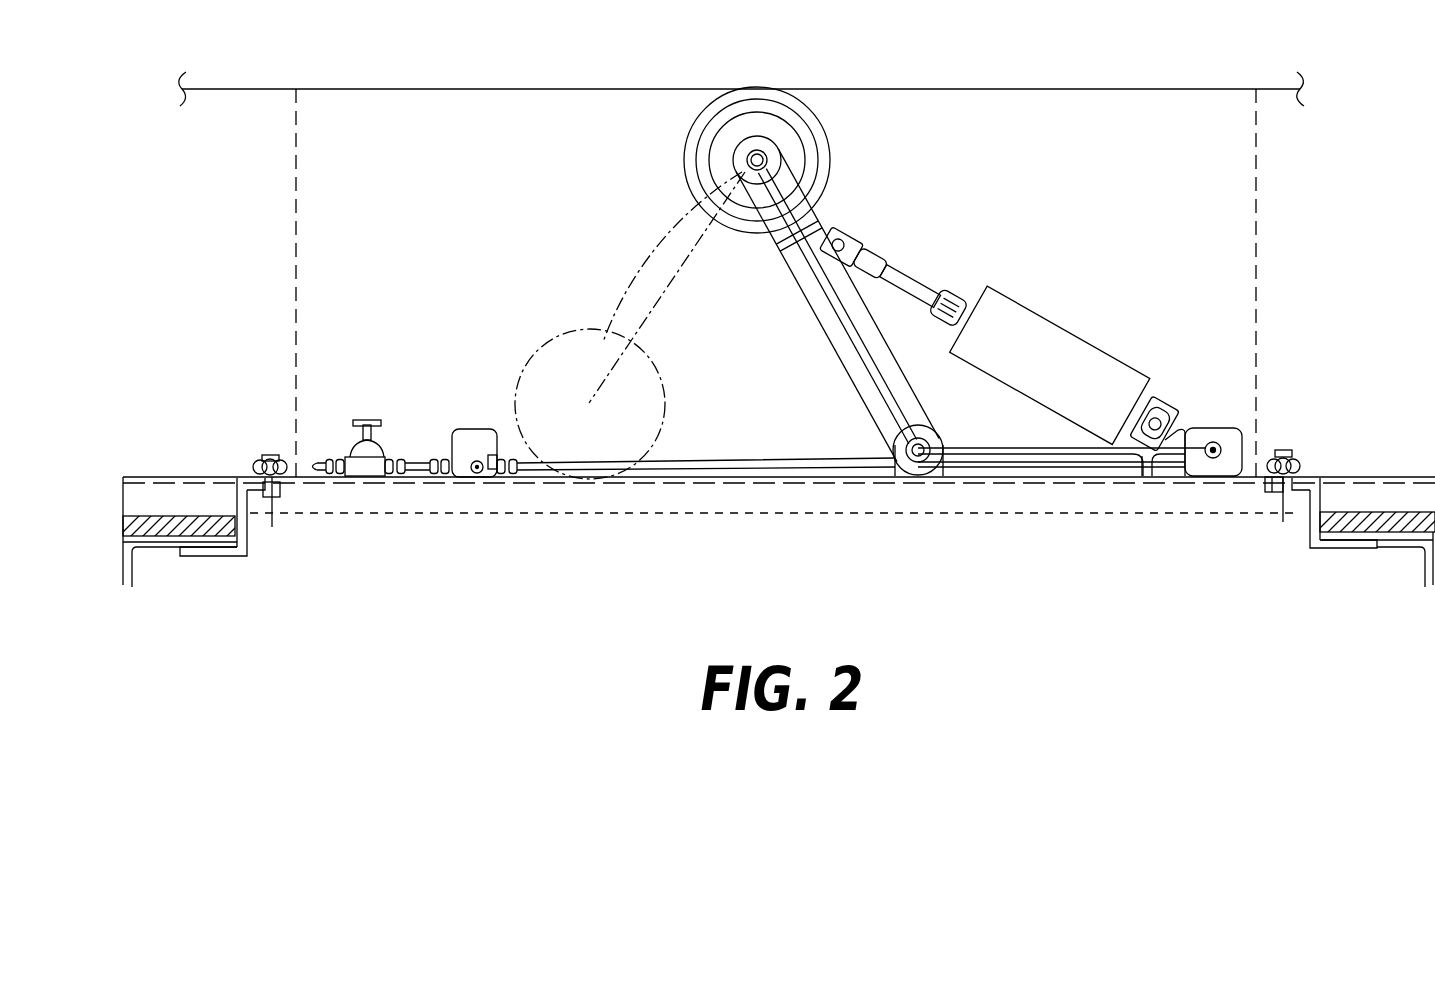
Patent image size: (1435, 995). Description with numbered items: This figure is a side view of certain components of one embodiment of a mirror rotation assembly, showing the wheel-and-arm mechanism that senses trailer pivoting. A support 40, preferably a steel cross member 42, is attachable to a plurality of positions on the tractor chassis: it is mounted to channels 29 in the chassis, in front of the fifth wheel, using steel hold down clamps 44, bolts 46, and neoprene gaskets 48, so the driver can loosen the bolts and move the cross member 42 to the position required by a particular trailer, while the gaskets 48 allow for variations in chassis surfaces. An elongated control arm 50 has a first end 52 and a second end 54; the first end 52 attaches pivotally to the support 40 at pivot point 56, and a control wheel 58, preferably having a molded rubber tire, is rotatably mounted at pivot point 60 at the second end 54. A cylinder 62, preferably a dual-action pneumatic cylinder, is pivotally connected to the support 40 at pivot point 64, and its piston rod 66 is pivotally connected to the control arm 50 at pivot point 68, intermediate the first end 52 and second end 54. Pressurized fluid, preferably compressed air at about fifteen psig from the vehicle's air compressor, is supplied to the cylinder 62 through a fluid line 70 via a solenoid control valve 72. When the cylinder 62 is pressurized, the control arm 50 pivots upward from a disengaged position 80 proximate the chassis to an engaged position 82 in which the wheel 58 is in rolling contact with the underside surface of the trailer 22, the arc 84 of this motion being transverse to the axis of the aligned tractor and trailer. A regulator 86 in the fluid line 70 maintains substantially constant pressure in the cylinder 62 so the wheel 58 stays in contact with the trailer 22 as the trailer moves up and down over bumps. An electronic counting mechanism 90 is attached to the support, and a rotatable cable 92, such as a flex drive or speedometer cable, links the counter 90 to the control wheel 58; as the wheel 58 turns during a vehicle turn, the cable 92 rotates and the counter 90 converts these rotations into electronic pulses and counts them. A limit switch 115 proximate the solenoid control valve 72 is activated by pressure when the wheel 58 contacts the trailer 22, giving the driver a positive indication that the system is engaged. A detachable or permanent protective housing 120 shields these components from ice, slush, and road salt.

The trailer 22 is at (962, 89).
The channels 29 is at (133, 568).
The support 40 is at (415, 500).
The cross member 42 is at (482, 498).
The hold down clamps 44 is at (250, 558).
The bolts 46 is at (258, 455).
The neoprene gaskets 48 is at (195, 525).
The control arm 50 is at (798, 290).
The first end 52 is at (873, 412).
The second end 54 is at (768, 232).
The pivot point 56 is at (893, 450).
The control wheel 58 is at (836, 152).
The pivot point 60 is at (750, 158).
The cylinder 62 is at (1047, 312).
The pivot point 64 is at (1165, 398).
The piston rod 66 is at (913, 280).
The pivot point 68 is at (841, 236).
The fluid line 70 is at (1040, 462).
The solenoid control valve 72 is at (450, 431).
The disengaged position 80 is at (513, 338).
The engaged position 82 is at (615, 133).
The arc 84 is at (617, 312).
The regulator 86 is at (352, 443).
The electronic counting mechanism 90 is at (1225, 425).
The rotatable cable 92 is at (917, 392).
The limit switch 115 is at (497, 478).
The protective housing 120 is at (1257, 247).